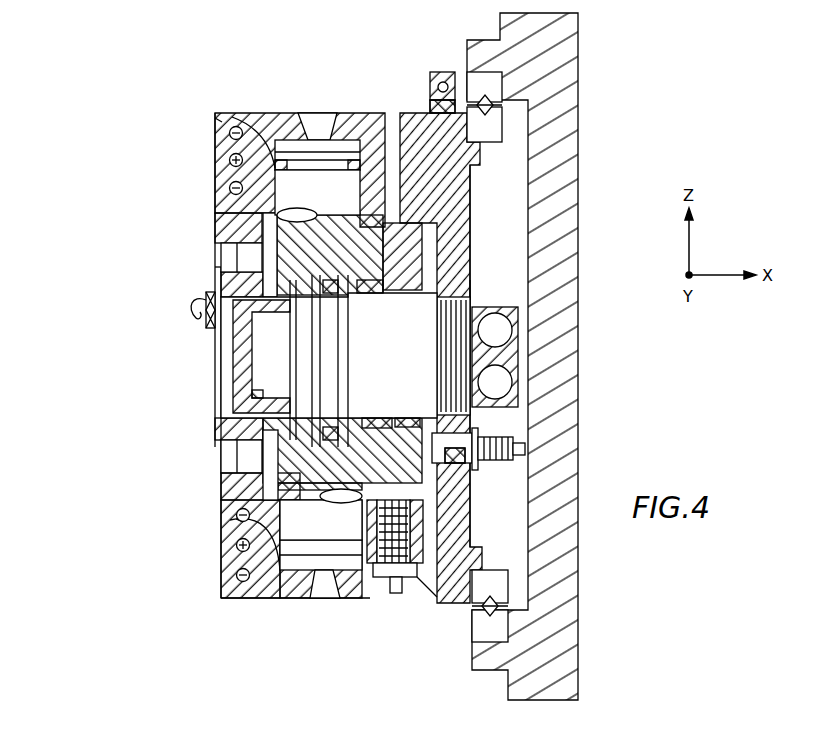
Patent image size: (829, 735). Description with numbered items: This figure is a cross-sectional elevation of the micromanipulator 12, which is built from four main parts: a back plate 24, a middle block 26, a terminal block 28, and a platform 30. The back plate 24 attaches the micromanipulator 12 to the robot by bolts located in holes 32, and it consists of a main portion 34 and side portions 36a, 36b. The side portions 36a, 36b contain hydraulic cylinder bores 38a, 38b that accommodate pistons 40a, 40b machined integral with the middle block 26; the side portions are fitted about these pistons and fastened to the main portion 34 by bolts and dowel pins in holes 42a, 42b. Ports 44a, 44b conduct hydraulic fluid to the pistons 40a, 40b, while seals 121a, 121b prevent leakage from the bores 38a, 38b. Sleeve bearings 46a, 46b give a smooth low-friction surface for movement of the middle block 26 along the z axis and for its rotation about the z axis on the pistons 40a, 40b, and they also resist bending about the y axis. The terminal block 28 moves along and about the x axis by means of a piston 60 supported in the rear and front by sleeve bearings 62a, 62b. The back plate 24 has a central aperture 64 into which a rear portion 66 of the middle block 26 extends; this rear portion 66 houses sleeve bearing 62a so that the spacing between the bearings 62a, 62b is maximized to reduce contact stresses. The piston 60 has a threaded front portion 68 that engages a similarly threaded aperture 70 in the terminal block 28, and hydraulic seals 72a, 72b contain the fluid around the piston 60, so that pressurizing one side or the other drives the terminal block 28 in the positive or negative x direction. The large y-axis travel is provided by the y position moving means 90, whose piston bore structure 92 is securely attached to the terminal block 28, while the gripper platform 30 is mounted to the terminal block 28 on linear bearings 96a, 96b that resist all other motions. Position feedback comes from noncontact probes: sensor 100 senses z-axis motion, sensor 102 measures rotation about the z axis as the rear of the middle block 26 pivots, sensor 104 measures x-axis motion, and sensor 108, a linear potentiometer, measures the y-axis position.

The micromanipulator 12 is at (148, 408).
The back plate 24 is at (208, 124).
The middle block 26 is at (226, 366).
The terminal block 28 is at (408, 104).
The platform 30 is at (584, 124).
The holes 32 is at (216, 258).
The main portion 34 is at (220, 492).
The side portion 36a is at (262, 113).
The side portion 36b is at (255, 599).
The hydraulic cylinder bore 38a is at (290, 140).
The hydraulic cylinder bore 38b is at (298, 572).
The piston 40a is at (360, 214).
The piston 40b is at (362, 536).
The holes 42a is at (229, 186).
The holes 42b is at (236, 573).
The port 44a is at (328, 112).
The port 44b is at (332, 599).
The sleeve bearing 46a is at (278, 212).
The sleeve bearing 46b is at (280, 530).
The piston 60 is at (326, 342).
The sleeve bearing 62a is at (256, 392).
The sleeve bearing 62b is at (408, 417).
The central aperture 64 is at (214, 343).
The rear portion 66 is at (270, 368).
The front portion 68 is at (446, 330).
The threaded aperture 70 is at (463, 283).
The hydraulic seal 72a is at (332, 300).
The hydraulic seal 72b is at (388, 420).
The y position moving means 90 is at (506, 208).
The piston bore structure 92 is at (490, 308).
The linear bearing 96a is at (509, 124).
The linear bearing 96b is at (516, 576).
The sensor 100 is at (385, 578).
The sensor 102 is at (208, 291).
The sensor 104 is at (503, 462).
The sensor 108 is at (440, 68).
The seal 121a is at (216, 120).
The seal 121b is at (236, 519).